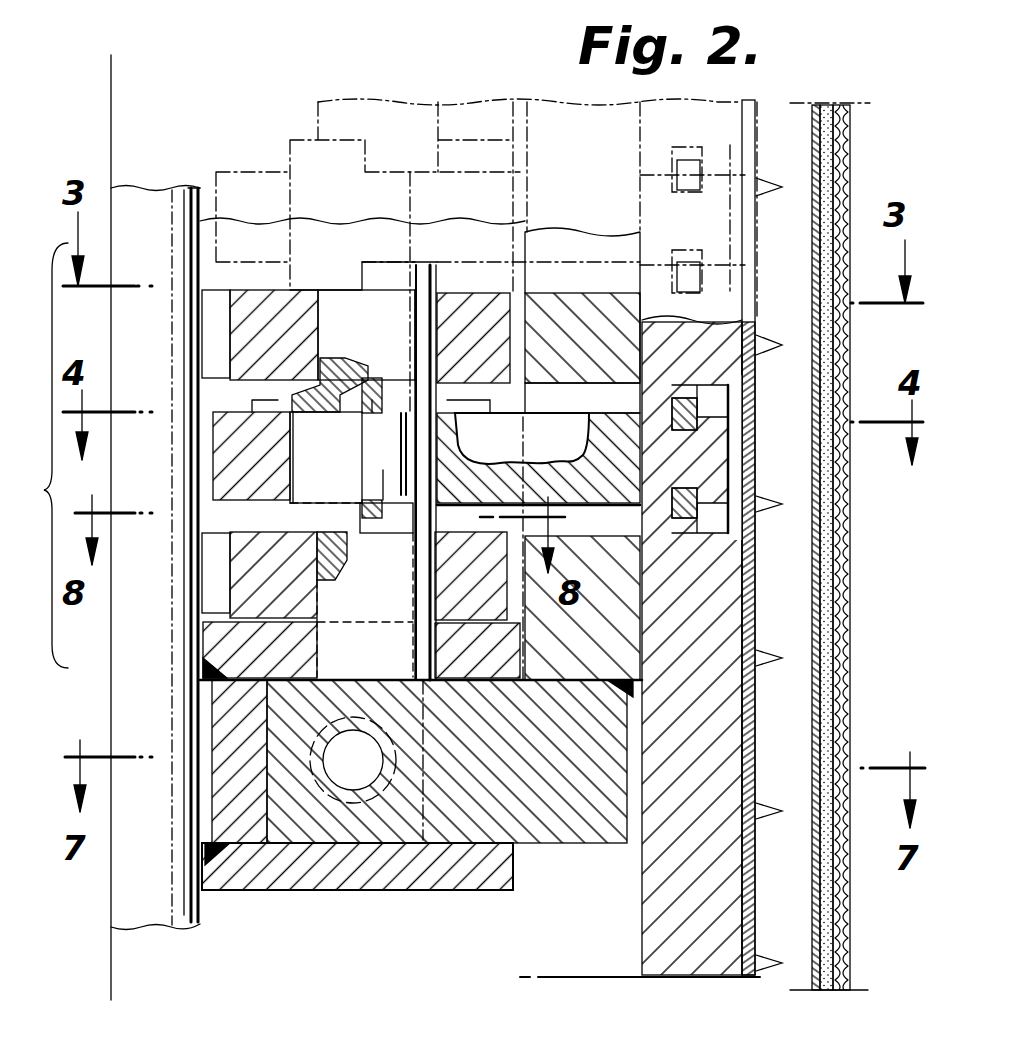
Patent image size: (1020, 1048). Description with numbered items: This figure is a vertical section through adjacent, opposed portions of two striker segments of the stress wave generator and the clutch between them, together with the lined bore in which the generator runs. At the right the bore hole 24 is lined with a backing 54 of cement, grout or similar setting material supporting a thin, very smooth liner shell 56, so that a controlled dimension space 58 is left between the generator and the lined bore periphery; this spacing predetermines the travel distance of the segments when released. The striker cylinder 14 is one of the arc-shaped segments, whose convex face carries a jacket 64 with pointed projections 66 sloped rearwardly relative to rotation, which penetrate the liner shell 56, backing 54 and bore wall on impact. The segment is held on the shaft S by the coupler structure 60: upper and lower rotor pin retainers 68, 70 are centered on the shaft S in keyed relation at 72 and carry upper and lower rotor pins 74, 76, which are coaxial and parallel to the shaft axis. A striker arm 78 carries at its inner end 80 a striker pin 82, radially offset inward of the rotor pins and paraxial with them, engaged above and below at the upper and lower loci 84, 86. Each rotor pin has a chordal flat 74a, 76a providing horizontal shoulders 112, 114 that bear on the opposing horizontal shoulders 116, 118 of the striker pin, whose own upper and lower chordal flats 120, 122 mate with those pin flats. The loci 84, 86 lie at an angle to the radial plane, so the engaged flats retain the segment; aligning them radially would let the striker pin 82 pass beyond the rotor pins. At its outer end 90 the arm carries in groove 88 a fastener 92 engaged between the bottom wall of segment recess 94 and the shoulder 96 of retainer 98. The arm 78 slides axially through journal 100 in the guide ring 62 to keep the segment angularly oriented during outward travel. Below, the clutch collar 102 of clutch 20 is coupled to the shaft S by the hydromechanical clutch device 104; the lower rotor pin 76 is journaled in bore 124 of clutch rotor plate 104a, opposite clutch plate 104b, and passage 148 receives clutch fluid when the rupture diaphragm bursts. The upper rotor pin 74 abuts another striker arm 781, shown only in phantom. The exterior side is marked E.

The striker cylinder 14 is at (718, 853).
The clutch 20 is at (343, 898).
The bore hole 24 is at (832, 935).
The backing 54 is at (828, 108).
The liner shell 56 is at (820, 168).
The controlled dimension space 58 is at (787, 712).
The coupler structure 60 is at (58, 439).
The guide ring 62 is at (623, 610).
The jacket 64 is at (765, 678).
The pointed projections 66 is at (760, 350).
The upper rotor pin retainer 68 is at (480, 313).
The lower rotor pin retainer 70 is at (590, 600).
The key 72 is at (205, 320).
The upper rotor pin 74 is at (385, 278).
The chordal flat 74a is at (315, 438).
The lower rotor pin 76 is at (365, 605).
The chordal flat 76a is at (307, 575).
The striker arm 78 is at (538, 452).
The inner end 80 is at (230, 441).
The striker pin 82 is at (297, 460).
The upper locus of engagement 84 is at (368, 380).
The lower locus of engagement 86 is at (350, 525).
The groove 88 is at (695, 432).
The outer end 90 is at (728, 450).
The fastener 92 is at (687, 513).
The segment recess 94 is at (733, 388).
The shoulder 96 is at (700, 405).
The retainer 98 is at (717, 517).
The journal 100 is at (570, 388).
The clutch collar 102 is at (567, 822).
The hydromechanical clutch device 104 is at (232, 752).
The clutch rotor plate 104a is at (235, 643).
The clutch plate 104b is at (263, 873).
The horizontal shoulder 112 is at (447, 437).
The horizontal shoulder 114 is at (387, 480).
The horizontal shoulder 116 is at (372, 403).
The horizontal shoulder 118 is at (408, 488).
The upper chordal flat 120 is at (380, 382).
The lower chordal flat 122 is at (380, 507).
The bore 124 is at (427, 683).
The passage 148 is at (375, 775).
The striker arm 781 is at (483, 173).
The shaft S is at (136, 210).
The exterior E is at (856, 548).